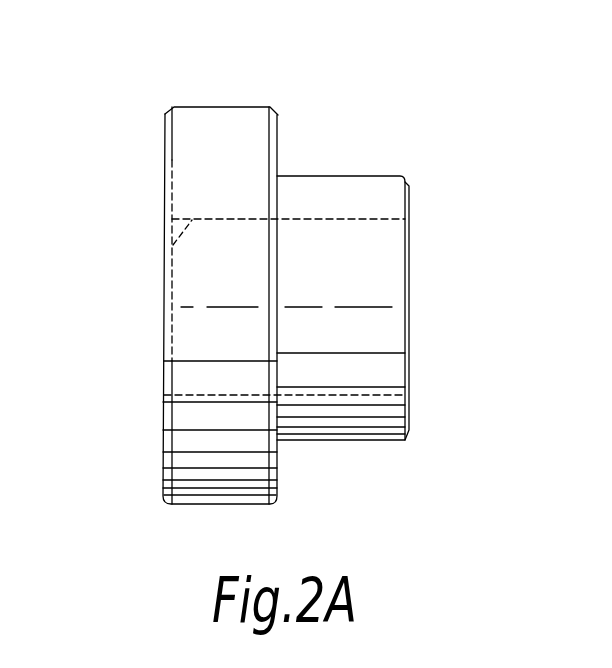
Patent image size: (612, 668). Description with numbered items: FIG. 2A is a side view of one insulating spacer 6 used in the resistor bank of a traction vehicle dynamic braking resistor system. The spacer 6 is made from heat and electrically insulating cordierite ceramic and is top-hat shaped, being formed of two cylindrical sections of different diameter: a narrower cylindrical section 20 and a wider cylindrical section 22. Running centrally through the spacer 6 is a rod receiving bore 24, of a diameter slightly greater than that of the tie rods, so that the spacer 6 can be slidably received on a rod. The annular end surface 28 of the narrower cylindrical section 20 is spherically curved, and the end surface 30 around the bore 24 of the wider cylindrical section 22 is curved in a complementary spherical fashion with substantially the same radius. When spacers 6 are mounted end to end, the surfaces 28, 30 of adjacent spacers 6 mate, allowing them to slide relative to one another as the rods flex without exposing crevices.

The insulating spacer 6 is at (127, 434).
The narrower cylindrical section 20 is at (361, 138).
The wider cylindrical section 22 is at (223, 90).
The rod receiving bore 24 is at (158, 255).
The annular end surface 28 is at (410, 207).
The end surface 30 is at (167, 212).